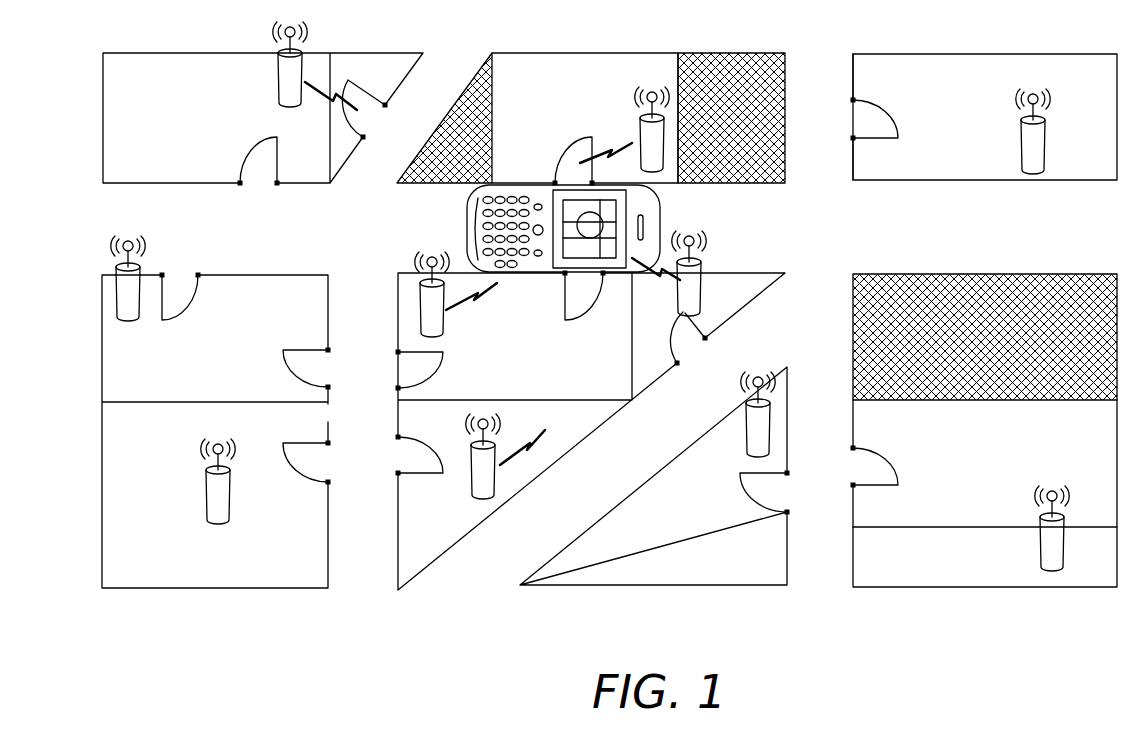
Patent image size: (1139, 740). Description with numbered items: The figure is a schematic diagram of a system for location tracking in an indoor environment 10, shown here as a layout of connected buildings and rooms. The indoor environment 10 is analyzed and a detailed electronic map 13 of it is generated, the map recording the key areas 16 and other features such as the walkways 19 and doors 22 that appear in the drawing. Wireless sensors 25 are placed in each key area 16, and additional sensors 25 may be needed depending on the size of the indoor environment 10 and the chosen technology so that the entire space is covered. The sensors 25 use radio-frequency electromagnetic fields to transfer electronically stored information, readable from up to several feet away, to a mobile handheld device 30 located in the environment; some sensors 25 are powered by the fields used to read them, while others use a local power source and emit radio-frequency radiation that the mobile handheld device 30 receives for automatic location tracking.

The indoor environment 10 is at (260, 611).
The electronic map 13 is at (742, 55).
The key area 16 is at (685, 575).
The walkway 19 is at (370, 575).
The door 22 is at (852, 118).
The wireless sensor 25 is at (278, 88).
The mobile handheld device 30 is at (514, 184).